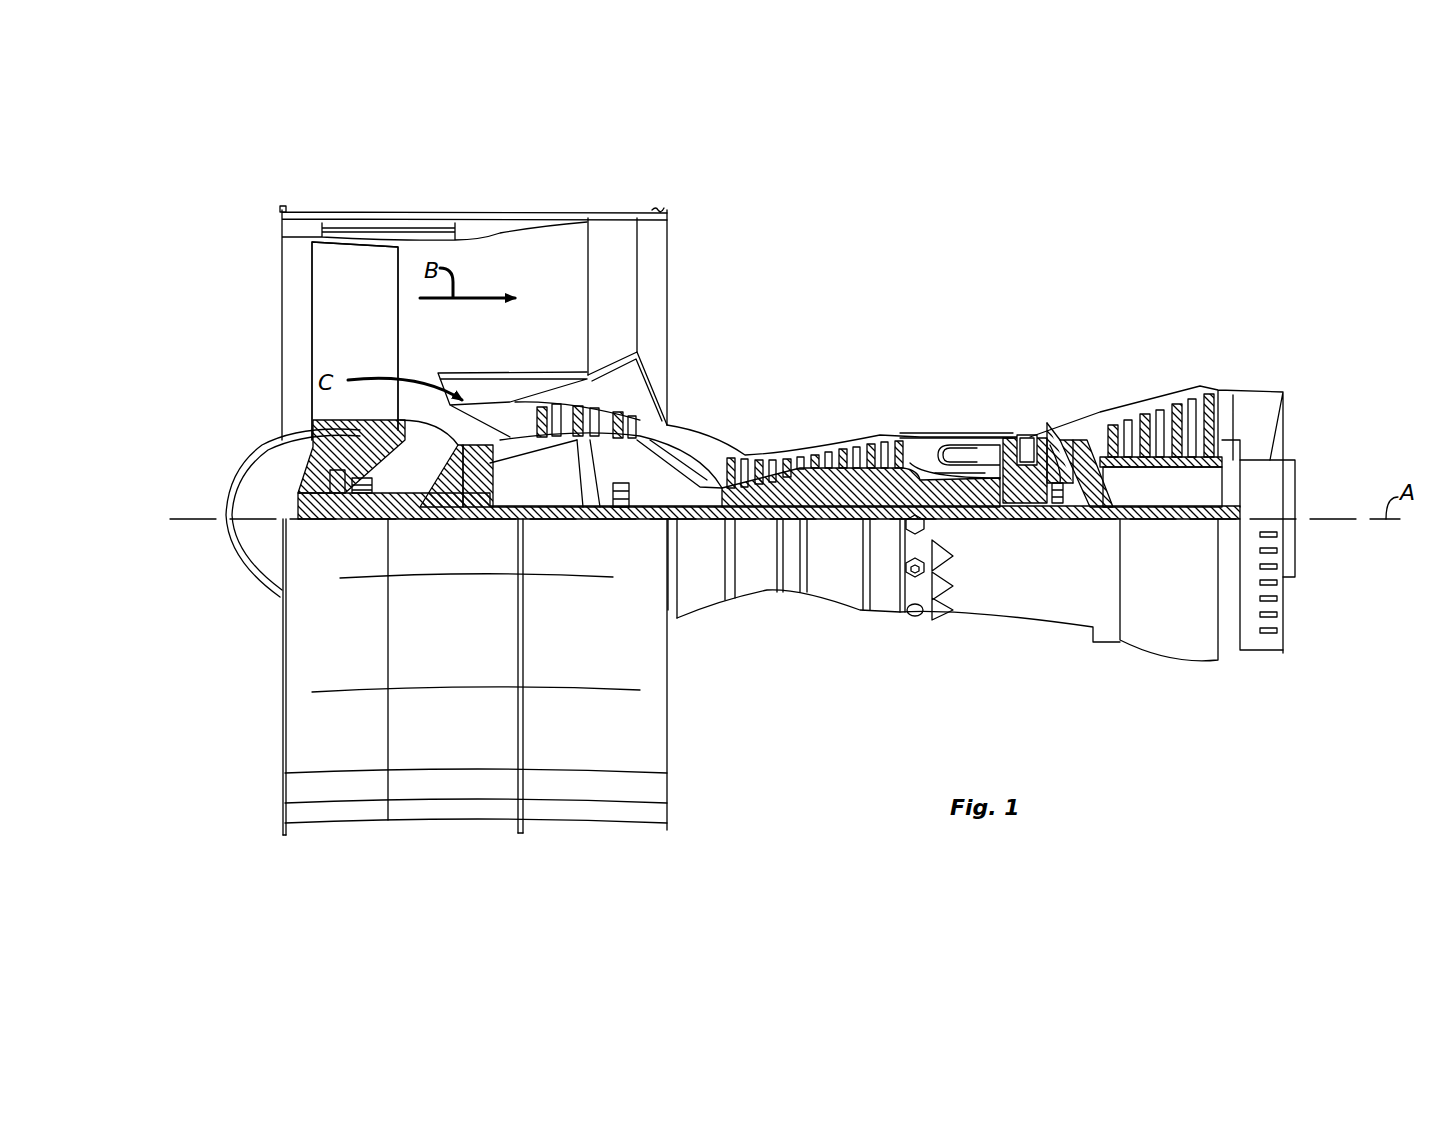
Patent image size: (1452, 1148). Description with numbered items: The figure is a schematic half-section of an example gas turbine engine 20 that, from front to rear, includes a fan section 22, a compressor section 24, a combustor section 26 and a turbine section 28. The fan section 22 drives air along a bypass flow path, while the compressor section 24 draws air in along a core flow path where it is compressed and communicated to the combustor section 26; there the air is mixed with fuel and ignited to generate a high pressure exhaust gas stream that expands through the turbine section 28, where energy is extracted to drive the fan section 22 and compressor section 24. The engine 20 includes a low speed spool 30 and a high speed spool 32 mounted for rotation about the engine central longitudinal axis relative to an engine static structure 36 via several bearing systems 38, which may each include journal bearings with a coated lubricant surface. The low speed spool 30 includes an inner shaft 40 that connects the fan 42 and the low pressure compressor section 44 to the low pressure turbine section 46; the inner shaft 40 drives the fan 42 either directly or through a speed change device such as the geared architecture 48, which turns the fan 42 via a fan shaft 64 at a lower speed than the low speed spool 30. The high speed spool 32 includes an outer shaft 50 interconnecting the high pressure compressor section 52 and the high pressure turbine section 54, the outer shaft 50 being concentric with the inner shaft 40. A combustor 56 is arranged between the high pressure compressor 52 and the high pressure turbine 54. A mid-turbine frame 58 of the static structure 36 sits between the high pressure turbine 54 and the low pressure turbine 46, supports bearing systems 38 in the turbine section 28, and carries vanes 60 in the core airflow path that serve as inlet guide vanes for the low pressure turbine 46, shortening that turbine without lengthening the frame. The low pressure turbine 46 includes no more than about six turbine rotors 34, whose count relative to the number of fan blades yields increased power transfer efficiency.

The gas turbine engine 20 is at (968, 266).
The fan section 22 is at (502, 191).
The compressor section 24 is at (517, 329).
The combustor section 26 is at (1008, 329).
The turbine section 28 is at (1013, 329).
The low speed spool 30 is at (836, 527).
The high speed spool 32 is at (880, 490).
The turbine rotors 34 is at (1163, 470).
The engine static structure 36 is at (877, 597).
The bearing systems 38 is at (360, 505).
The inner shaft 40 is at (690, 522).
The fan 42 is at (351, 367).
The low pressure compressor section 44 is at (597, 413).
The low pressure turbine section 46 is at (1163, 403).
The geared architecture 48 is at (490, 500).
The outer shaft 50 is at (970, 515).
The high pressure compressor section 52 is at (810, 487).
The high pressure turbine section 54 is at (1027, 437).
The combustor 56 is at (957, 457).
The mid-turbine frame 58 is at (1087, 415).
The vanes 60 is at (1067, 447).
The fan shaft 64 is at (280, 505).